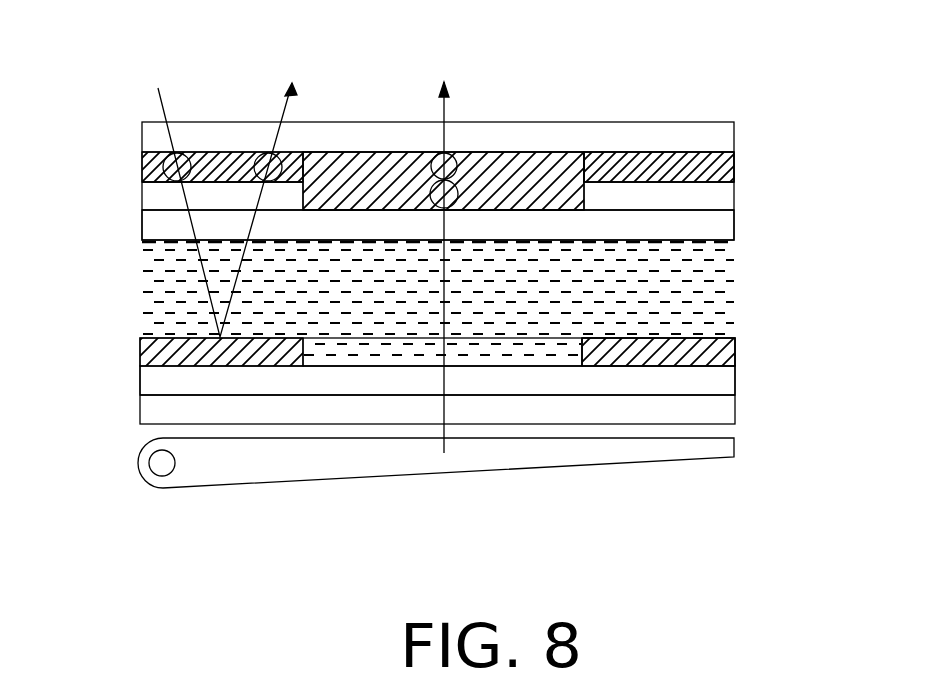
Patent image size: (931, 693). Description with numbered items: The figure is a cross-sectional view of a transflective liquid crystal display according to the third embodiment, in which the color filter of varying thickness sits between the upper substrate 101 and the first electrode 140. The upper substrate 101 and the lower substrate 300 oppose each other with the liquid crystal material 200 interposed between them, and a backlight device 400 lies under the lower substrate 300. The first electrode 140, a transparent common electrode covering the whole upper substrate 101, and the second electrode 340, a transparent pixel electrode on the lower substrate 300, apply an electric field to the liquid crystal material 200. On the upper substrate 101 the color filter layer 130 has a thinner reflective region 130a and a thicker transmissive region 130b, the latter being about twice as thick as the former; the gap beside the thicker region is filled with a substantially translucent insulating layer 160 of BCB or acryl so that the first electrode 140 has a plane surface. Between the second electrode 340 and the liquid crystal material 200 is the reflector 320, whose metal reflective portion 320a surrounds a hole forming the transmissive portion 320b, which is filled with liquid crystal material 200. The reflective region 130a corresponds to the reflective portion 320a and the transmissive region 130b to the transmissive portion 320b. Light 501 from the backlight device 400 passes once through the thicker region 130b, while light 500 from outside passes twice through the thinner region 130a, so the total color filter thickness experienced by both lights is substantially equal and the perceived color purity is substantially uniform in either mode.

The upper substrate 101 is at (155, 140).
The color filter layer 130 is at (712, 50).
The reflective region 130a is at (629, 152).
The transmissive region 130b is at (570, 152).
The insulating layer 160 is at (727, 198).
The first electrode 140 is at (718, 222).
The liquid crystal material 200 is at (165, 288).
The lower substrate 300 is at (722, 413).
The second electrode 340 is at (722, 378).
The reflector 320 is at (857, 248).
The reflective portion 320a is at (717, 337).
The transmissive portion 320b is at (537, 347).
The backlight device 400 is at (145, 465).
The light from the outside 500 is at (215, 200).
The light from the backlight device 501 is at (447, 254).